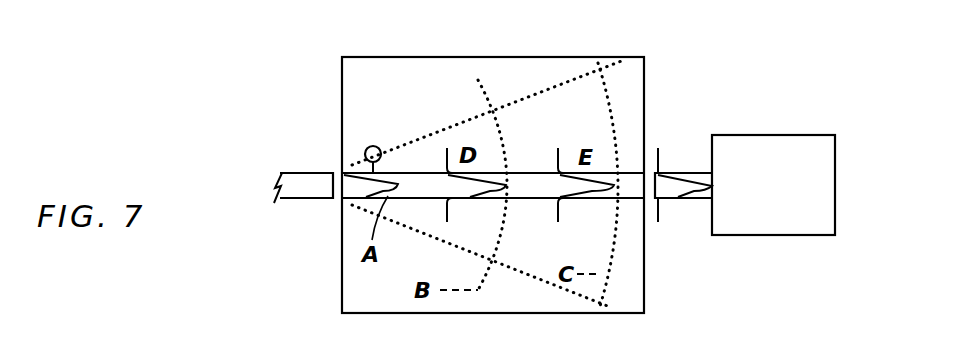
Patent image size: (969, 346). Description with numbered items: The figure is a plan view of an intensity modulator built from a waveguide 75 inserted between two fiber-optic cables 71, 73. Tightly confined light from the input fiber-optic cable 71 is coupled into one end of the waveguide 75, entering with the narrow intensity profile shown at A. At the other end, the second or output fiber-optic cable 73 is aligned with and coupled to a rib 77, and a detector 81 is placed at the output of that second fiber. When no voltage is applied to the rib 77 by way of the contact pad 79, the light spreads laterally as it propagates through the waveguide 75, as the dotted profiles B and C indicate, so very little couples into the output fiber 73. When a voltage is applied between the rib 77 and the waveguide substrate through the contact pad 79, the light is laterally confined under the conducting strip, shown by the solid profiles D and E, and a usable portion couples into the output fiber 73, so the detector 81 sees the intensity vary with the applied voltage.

The fiber-optic cable 71 is at (308, 172).
The fiber-optic cable 73 is at (690, 172).
The waveguide 75 is at (657, 49).
The rib 77 is at (527, 172).
The contact pad 79 is at (374, 146).
The detector 81 is at (786, 135).